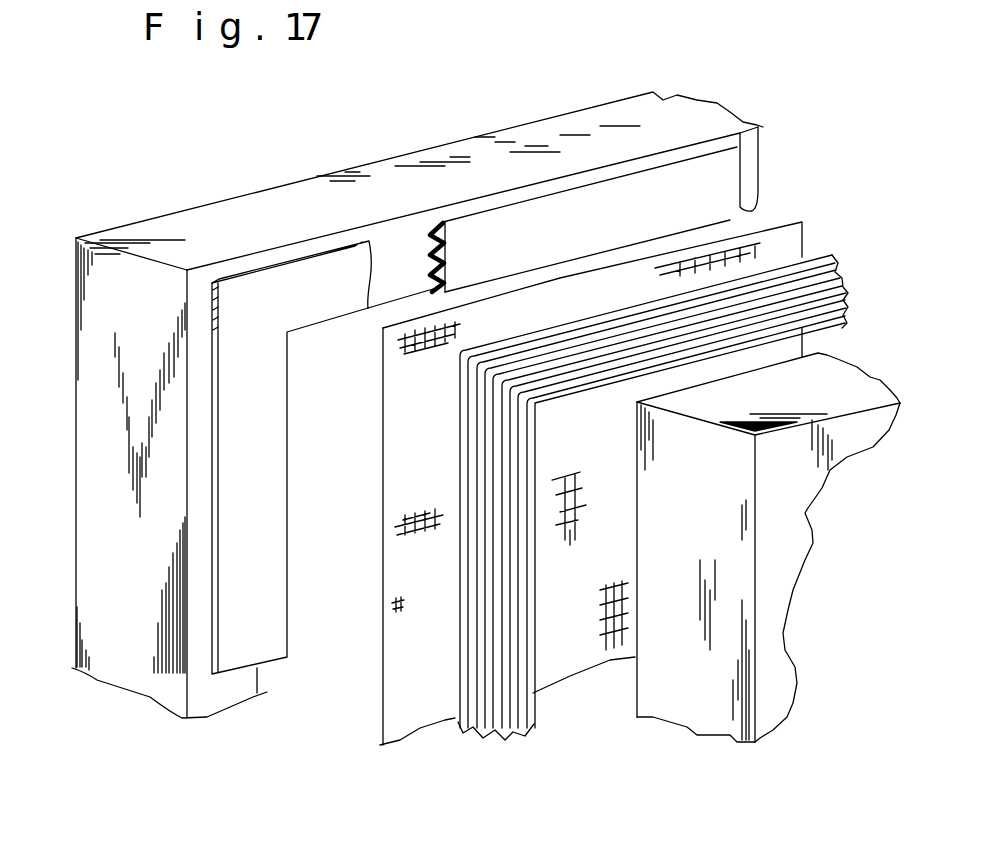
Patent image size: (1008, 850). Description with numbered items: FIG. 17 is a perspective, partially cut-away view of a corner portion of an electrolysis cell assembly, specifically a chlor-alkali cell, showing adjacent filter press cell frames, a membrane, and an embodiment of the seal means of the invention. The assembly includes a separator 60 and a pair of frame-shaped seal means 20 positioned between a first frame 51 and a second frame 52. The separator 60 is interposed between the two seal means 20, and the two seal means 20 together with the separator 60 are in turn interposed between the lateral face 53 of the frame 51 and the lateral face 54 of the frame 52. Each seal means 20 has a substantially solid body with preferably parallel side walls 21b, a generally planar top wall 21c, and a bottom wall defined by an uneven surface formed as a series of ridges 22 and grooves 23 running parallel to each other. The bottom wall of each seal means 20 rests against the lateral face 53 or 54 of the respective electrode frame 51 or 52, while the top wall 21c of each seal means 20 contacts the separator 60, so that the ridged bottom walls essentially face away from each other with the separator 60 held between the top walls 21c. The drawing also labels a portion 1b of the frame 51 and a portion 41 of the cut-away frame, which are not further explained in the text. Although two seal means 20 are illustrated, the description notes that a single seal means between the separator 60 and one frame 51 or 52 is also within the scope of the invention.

The frame member 1b is at (213, 383).
The seal means 20 is at (242, 711).
The side walls 21b is at (658, 170).
The top wall 21c is at (257, 473).
The ridges 22 is at (430, 258).
The grooves 23 is at (430, 252).
The jamb 41 is at (130, 655).
The frame 51 is at (197, 227).
The frame 52 is at (840, 400).
The lateral face 53 is at (386, 230).
The lateral face 54 is at (633, 670).
The separator 60 is at (402, 373).